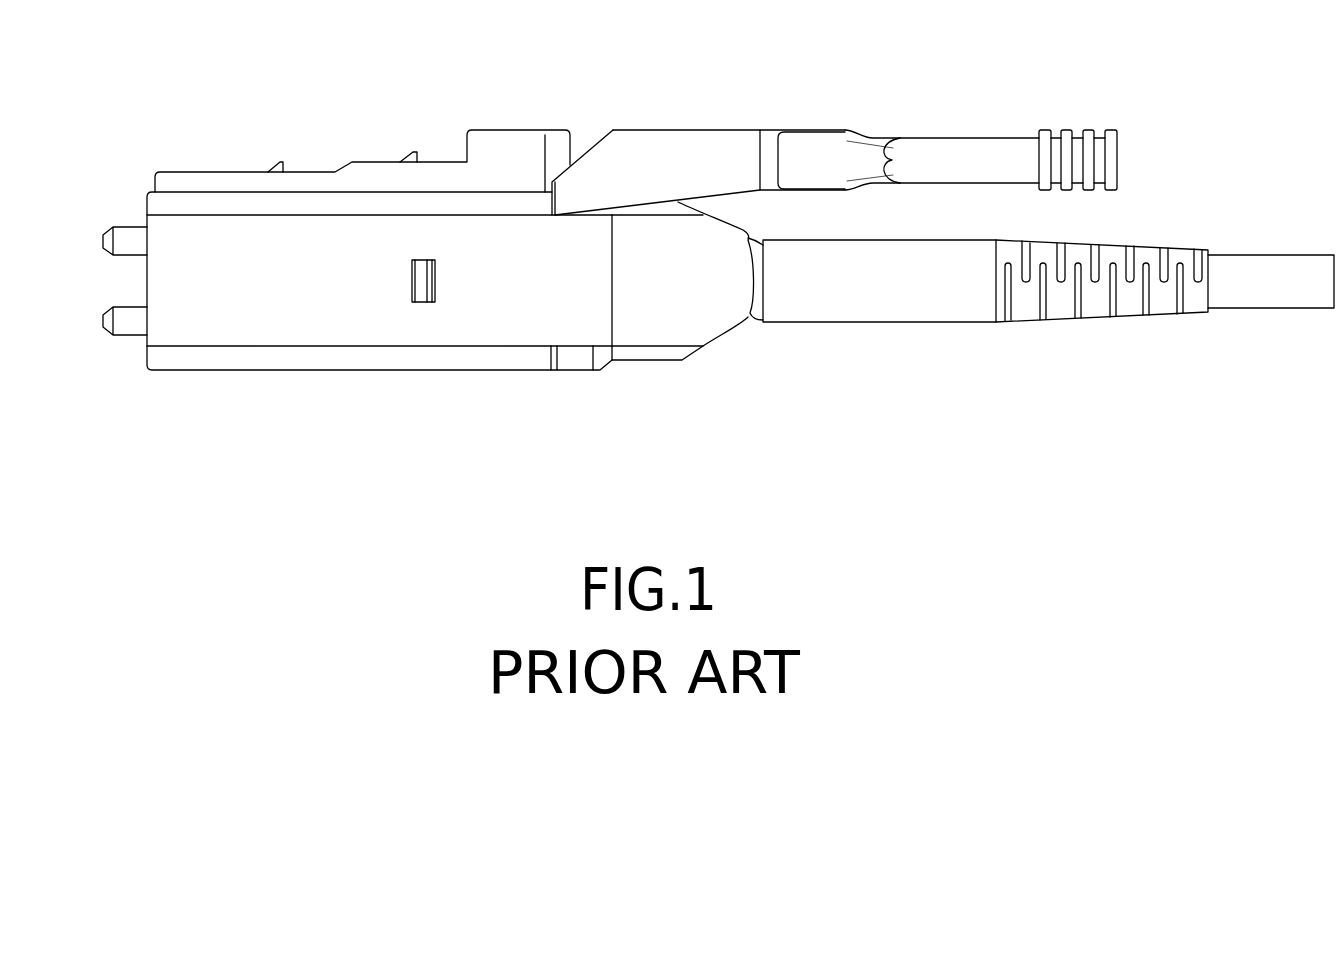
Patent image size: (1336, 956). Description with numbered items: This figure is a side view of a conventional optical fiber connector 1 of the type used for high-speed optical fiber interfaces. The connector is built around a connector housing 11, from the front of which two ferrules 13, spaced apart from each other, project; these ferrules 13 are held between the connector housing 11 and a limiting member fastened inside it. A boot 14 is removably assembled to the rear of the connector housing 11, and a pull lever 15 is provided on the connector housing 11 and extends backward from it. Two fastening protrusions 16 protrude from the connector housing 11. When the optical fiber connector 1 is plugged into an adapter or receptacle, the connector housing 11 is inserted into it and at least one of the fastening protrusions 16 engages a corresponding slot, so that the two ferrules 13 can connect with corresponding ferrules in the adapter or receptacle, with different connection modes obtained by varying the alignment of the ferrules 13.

The optical fiber connector 1 is at (699, 291).
The connector housing 11 is at (265, 338).
The ferrules 13 is at (132, 233).
The boot 14 is at (727, 328).
The pull lever 15 is at (972, 152).
The fastening protrusions 16 is at (282, 162).